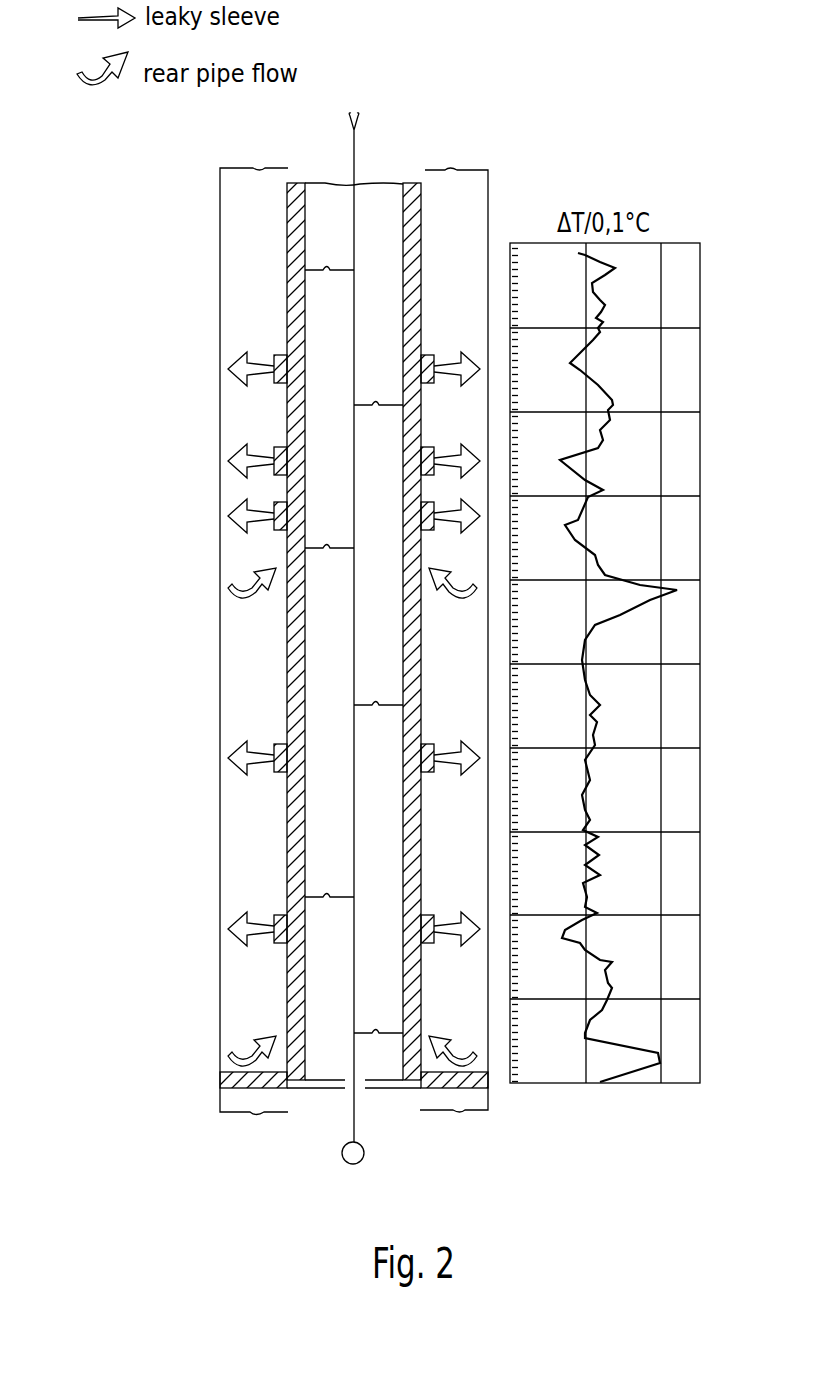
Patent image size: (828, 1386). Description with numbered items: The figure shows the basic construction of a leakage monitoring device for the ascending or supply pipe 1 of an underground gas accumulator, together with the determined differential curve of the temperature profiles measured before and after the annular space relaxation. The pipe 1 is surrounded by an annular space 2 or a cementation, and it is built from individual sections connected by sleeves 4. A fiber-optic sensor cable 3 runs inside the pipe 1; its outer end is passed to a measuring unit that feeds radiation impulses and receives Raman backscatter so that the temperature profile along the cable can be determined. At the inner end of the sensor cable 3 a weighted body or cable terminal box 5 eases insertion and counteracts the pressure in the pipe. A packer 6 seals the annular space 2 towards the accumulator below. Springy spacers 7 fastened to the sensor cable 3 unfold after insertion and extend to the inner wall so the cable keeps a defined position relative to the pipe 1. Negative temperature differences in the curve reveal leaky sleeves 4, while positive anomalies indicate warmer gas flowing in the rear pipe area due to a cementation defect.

The ascending or supply pipe 1 is at (292, 233).
The annular space 2 is at (238, 281).
The fiber-optic sensor cable 3 is at (352, 1100).
The sleeves 4 is at (280, 356).
The weighted body or cable terminal box 5 is at (364, 1155).
The packer 6 is at (220, 1083).
The spacers 7 is at (321, 897).